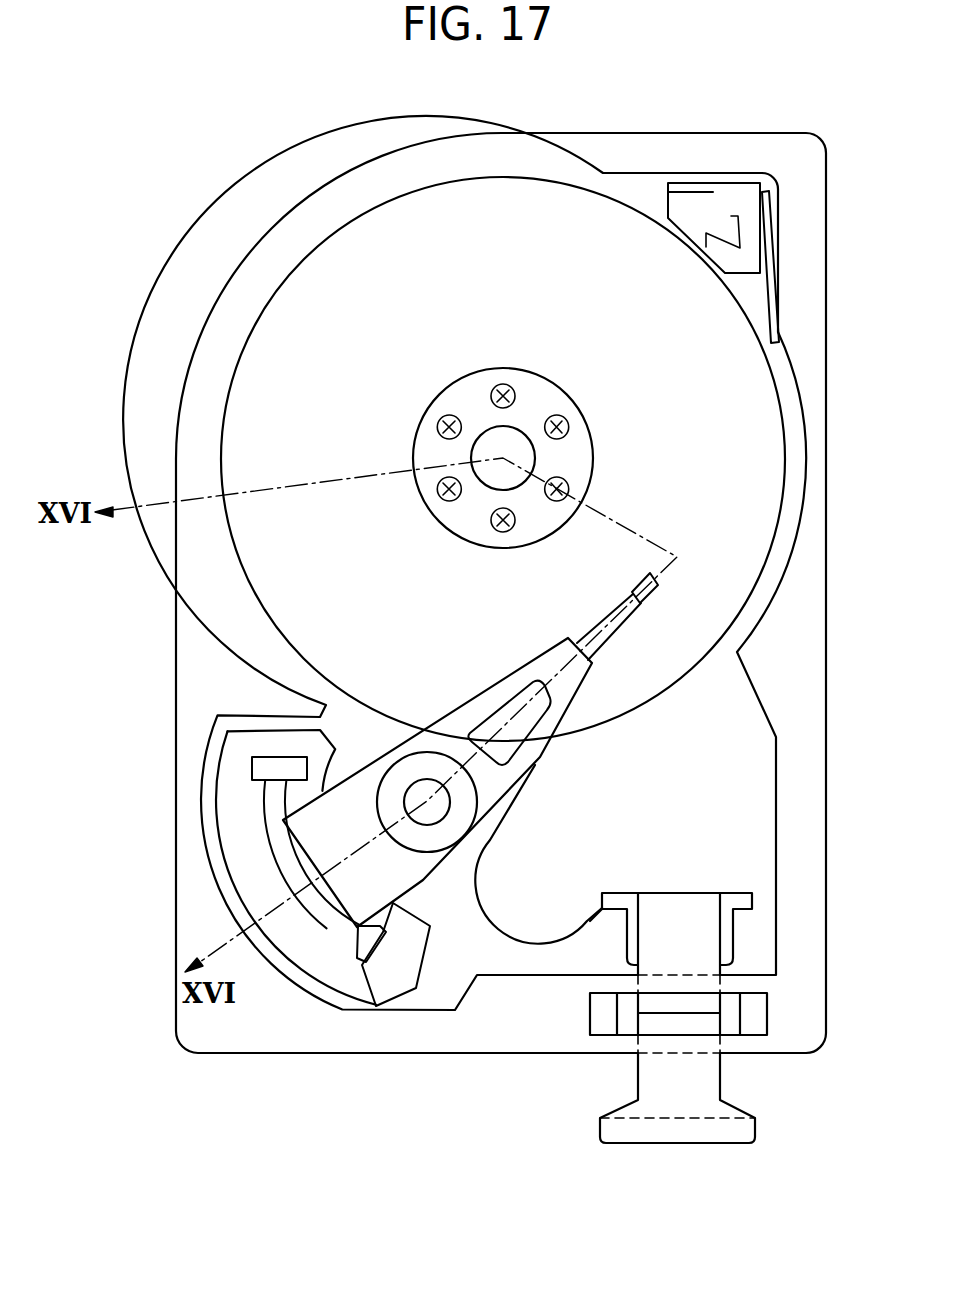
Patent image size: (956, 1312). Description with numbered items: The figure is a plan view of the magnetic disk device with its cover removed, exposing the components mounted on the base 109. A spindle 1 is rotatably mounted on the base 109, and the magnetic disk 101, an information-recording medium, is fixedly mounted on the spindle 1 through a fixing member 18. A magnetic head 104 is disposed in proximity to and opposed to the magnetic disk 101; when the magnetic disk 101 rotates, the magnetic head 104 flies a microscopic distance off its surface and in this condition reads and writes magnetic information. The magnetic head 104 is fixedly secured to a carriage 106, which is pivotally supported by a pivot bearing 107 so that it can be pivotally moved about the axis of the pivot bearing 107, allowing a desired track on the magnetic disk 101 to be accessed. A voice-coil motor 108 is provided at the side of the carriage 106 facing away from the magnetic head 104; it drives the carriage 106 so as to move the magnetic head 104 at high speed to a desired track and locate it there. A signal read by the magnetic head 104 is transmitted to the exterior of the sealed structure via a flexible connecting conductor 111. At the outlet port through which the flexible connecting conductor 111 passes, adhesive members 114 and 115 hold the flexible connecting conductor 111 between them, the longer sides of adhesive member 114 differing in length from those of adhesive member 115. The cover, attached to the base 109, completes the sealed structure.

The spindle 1 is at (503, 457).
The fixing member 18 is at (592, 428).
The magnetic disk 101 is at (733, 522).
The magnetic head 104 is at (652, 598).
The carriage 106 is at (570, 697).
The pivot bearing 107 is at (437, 806).
The voice-coil motor 108 is at (333, 972).
The base 109 is at (790, 625).
The flexible connecting conductor 111 is at (483, 927).
The adhesive member 114 is at (755, 1040).
The adhesive member 115 is at (627, 1040).